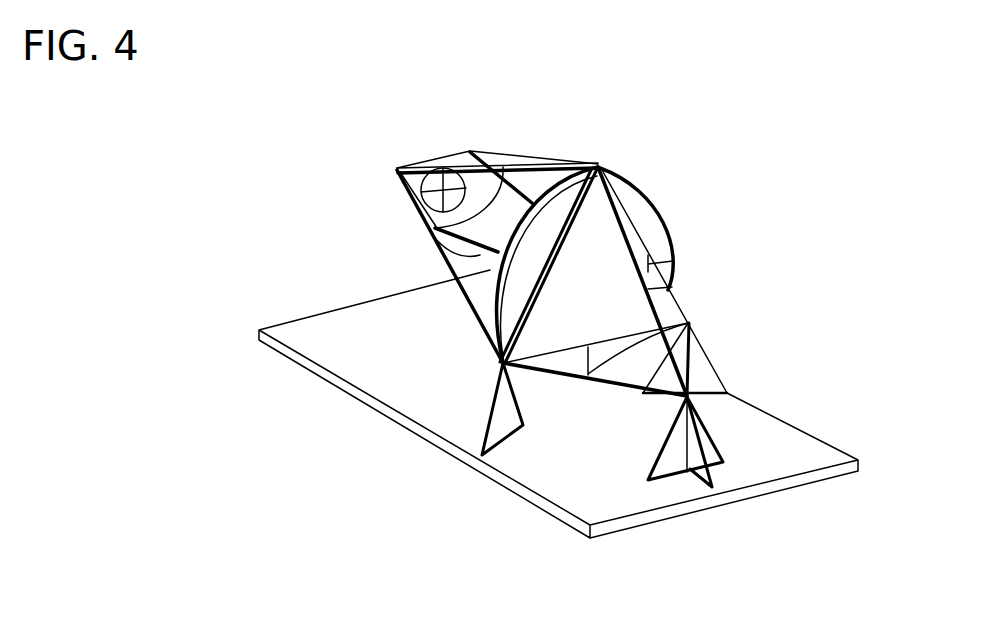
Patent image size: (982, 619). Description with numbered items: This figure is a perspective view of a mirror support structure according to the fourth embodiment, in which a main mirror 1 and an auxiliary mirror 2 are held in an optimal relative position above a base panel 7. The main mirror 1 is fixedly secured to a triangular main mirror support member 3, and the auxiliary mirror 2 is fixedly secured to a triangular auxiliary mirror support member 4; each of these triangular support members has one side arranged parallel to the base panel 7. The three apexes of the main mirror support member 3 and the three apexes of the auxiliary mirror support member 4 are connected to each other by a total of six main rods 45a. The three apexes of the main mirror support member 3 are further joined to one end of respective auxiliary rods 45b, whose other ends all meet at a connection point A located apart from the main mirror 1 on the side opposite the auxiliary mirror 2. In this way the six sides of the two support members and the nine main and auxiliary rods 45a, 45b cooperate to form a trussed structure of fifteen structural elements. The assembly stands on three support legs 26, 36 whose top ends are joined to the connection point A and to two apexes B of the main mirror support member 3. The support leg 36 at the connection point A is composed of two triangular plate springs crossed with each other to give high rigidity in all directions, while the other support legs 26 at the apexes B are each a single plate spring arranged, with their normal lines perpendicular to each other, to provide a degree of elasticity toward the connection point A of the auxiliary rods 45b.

The main mirror 1 is at (640, 198).
The auxiliary mirror 2 is at (446, 180).
The main mirror support member 3 is at (647, 258).
The auxiliary mirror support member 4 is at (428, 169).
The base panel 7 is at (747, 403).
The support leg 26 is at (707, 362).
The support leg 36 is at (694, 470).
The main rod 45a is at (503, 156).
The auxiliary rod 45b is at (668, 288).
The connection point A is at (690, 397).
The apex B is at (690, 322).